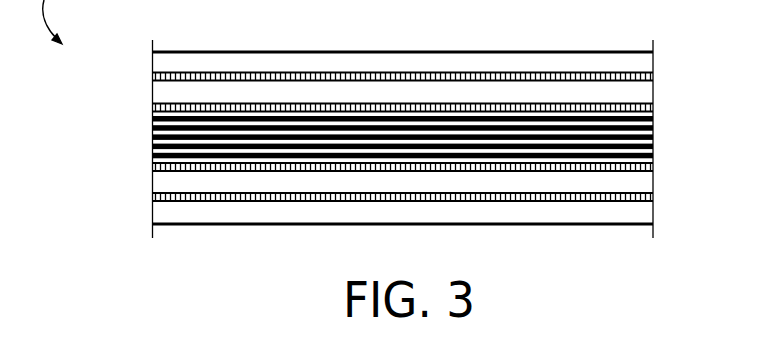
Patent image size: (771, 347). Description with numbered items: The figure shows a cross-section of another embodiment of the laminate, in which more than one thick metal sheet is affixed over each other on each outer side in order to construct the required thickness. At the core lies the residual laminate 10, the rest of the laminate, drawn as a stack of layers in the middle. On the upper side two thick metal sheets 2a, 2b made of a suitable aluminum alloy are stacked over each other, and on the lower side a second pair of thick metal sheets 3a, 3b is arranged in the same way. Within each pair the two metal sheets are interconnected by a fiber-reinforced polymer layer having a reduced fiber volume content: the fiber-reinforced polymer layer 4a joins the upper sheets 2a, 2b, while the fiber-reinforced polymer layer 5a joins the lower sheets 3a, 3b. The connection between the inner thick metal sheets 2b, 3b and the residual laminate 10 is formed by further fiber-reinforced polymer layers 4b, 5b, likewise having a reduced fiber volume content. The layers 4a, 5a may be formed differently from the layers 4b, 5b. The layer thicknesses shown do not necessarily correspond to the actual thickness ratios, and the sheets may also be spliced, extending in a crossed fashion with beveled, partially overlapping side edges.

The thick metal sheet 2a is at (160, 63).
The thick metal sheet 2b is at (160, 90).
The thick metal sheet 3a is at (160, 212).
The thick metal sheet 3b is at (160, 183).
The fiber-reinforced polymer layer 4a is at (648, 76).
The fiber-reinforced polymer layer 4b is at (648, 108).
The fiber-reinforced polymer layer 5a is at (648, 197).
The fiber-reinforced polymer layer 5b is at (648, 167).
The residual laminate 10 is at (150, 113).